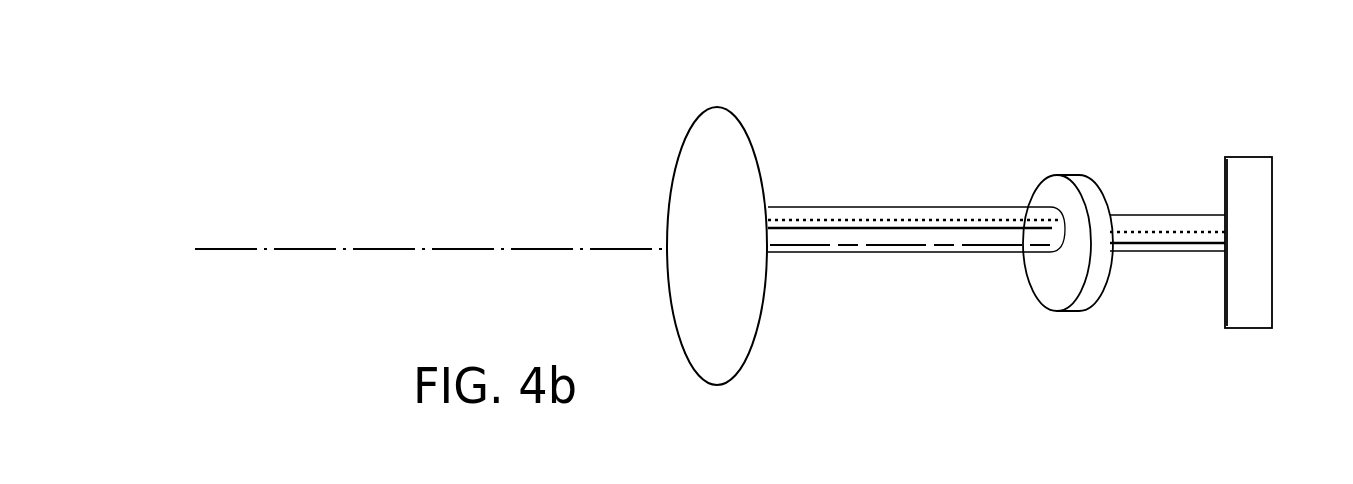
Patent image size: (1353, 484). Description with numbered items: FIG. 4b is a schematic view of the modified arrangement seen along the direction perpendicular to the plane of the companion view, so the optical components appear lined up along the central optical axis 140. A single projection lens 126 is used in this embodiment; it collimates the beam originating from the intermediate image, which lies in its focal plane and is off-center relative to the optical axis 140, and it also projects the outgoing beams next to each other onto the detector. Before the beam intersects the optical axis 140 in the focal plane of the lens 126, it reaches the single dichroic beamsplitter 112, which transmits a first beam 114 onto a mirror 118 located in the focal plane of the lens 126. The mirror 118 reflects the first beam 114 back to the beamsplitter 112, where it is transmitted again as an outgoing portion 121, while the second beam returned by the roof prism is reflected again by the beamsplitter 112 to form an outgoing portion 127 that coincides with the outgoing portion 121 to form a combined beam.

The optical axis 140 is at (403, 250).
The projection lens 126 is at (717, 158).
The outgoing portion of the second beam 127 is at (889, 218).
The outgoing portion of the first beam 121 is at (903, 253).
The dichroic beamsplitter 112 is at (1060, 192).
The first beam 114 is at (1161, 231).
The mirror 118 is at (1252, 195).